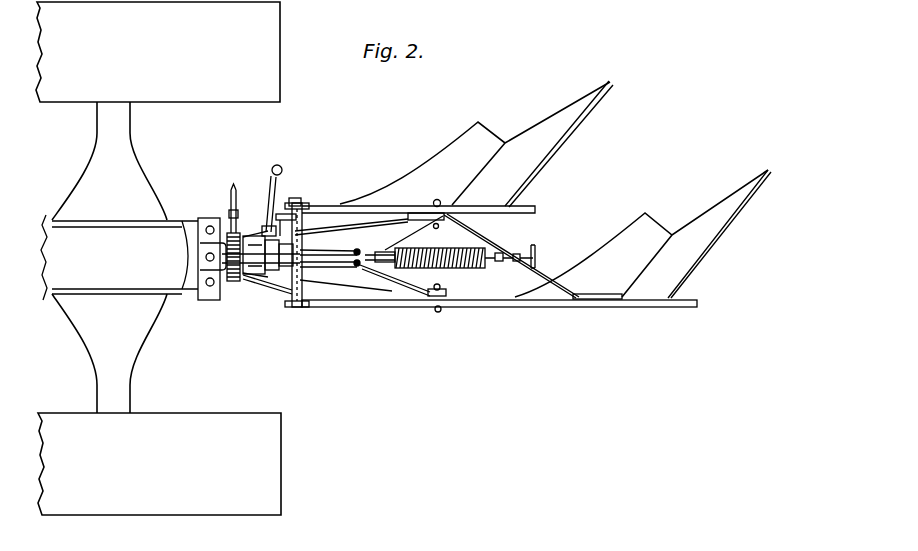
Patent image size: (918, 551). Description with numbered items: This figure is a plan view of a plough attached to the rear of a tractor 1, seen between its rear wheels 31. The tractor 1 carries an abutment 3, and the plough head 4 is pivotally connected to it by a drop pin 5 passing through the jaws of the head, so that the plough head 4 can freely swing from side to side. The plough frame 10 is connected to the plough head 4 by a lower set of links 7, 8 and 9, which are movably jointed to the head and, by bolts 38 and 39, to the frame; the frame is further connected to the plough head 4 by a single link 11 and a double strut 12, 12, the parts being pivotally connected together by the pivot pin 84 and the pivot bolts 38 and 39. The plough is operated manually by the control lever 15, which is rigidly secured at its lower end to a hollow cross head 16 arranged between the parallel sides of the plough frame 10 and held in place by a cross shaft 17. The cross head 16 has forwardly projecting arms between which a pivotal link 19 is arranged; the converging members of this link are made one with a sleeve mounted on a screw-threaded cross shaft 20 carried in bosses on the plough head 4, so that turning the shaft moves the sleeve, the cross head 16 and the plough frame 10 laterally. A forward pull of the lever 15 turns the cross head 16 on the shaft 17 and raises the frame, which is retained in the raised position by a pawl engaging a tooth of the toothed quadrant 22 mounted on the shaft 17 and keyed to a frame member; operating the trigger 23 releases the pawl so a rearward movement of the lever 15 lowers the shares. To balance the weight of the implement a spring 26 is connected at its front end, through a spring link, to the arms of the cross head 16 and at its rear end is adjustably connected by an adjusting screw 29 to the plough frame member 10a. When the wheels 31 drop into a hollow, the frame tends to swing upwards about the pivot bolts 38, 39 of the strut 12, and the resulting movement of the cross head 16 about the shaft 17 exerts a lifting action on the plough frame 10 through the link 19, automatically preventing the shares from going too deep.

The rear wheel 31 is at (158, 258).
The tractor 1 is at (119, 257).
The abutment 3 is at (197, 234).
The drop pin 5 is at (199, 257).
The single link 11 is at (257, 260).
The plough head 4 is at (290, 288).
The cross shaft 17 is at (295, 308).
The cross shaft 20 is at (237, 230).
The pivotal link 19 is at (267, 250).
The trigger 23 is at (273, 167).
The control lever 15 is at (282, 200).
The toothed sector or quadrant 22 is at (300, 207).
The hollow cross head 16 is at (337, 230).
The link 7 is at (350, 204).
The double strut 12 is at (395, 205).
The pivot bolt 39 is at (437, 200).
The plough frame 10 is at (507, 206).
The plough frame member 10a is at (515, 297).
The spring 26 is at (472, 267).
The adjusting screw 29 is at (535, 256).
The link 8 is at (357, 270).
The link 9 is at (392, 292).
The pivot pin 84 is at (357, 253).
The pivot bolt 38 is at (438, 312).